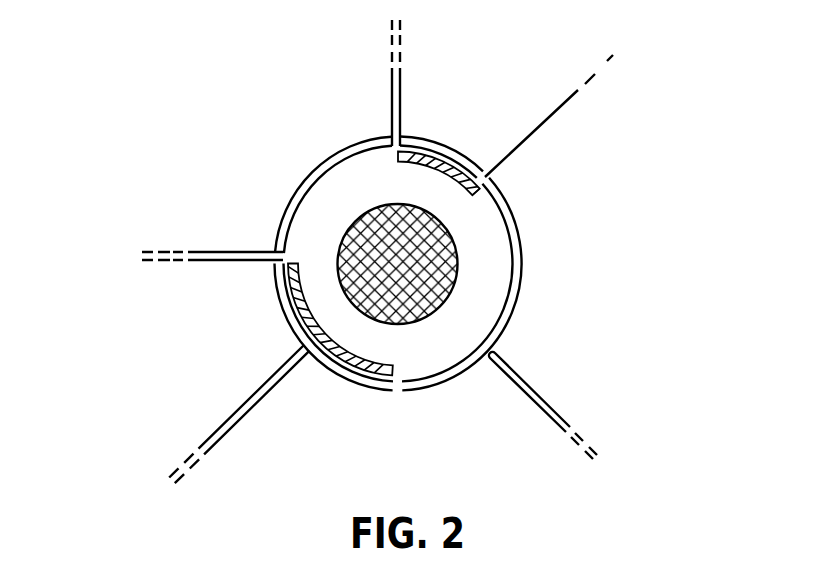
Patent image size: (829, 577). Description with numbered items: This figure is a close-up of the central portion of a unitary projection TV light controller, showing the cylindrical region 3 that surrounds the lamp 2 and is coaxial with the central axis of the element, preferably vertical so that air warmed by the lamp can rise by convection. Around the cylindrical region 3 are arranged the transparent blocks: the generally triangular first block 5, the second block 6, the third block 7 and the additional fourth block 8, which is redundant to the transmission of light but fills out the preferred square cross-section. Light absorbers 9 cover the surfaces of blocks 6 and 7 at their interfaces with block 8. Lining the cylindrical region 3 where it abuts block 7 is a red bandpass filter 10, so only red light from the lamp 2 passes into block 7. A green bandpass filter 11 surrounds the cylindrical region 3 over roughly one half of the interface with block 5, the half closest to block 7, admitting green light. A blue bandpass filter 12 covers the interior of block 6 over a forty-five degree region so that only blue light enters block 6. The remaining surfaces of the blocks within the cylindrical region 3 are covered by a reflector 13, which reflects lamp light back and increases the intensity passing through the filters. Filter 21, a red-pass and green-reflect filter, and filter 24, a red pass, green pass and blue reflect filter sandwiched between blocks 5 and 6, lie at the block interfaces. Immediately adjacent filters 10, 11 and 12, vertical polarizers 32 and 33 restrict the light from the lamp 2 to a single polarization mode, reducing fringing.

The lamp 2 is at (360, 213).
The cylindrical region 3 is at (493, 262).
The first block 5 is at (409, 455).
The second block 6 is at (628, 276).
The third block 7 is at (230, 341).
The fourth block 8 is at (240, 160).
The light absorber 9 is at (390, 97).
The red bandpass filter 10 is at (279, 303).
The green bandpass filter 11 is at (340, 379).
The blue bandpass filter 12 is at (428, 140).
The reflector 13 is at (322, 158).
The filter 21 is at (247, 413).
The filter 24 is at (527, 378).
The vertical polarizer 32 is at (300, 282).
The vertical polarizer 33 is at (458, 186).